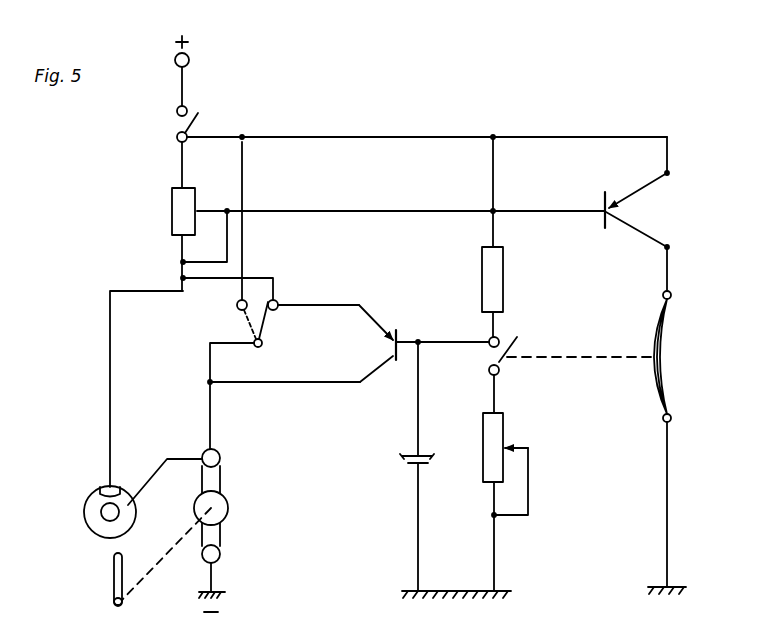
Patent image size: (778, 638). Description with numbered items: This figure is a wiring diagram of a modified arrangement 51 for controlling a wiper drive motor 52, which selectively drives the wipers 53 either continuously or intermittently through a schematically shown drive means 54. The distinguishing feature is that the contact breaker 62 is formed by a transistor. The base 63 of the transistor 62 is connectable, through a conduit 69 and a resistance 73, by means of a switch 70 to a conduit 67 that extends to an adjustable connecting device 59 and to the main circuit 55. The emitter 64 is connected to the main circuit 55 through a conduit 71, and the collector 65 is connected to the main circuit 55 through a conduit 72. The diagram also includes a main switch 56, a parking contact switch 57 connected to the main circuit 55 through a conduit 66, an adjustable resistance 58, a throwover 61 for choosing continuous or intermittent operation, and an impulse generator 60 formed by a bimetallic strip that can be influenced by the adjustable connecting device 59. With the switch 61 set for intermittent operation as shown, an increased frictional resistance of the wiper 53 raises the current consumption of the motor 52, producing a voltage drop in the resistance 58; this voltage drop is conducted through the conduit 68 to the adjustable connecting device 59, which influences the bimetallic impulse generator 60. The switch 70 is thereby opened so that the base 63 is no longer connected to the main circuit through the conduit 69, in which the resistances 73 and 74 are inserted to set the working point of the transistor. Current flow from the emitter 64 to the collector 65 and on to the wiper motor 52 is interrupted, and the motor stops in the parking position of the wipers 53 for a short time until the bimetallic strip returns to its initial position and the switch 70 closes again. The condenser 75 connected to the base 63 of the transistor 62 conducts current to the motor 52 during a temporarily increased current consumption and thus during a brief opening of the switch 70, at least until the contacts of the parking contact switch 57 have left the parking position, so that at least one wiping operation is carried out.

The arrangement 51 is at (499, 117).
The wiper drive motor 52 is at (228, 498).
The wipers 53 is at (113, 572).
The drive means 54 is at (163, 557).
The main circuit 55 is at (212, 413).
The main switch 56 is at (190, 126).
The parking contact switch 57 is at (84, 517).
The adjustable resistance 58 is at (172, 212).
The adjustable connecting device 59 is at (633, 207).
The impulse generator 60 is at (664, 341).
The throwover 61 is at (266, 300).
The contact breaker 62 is at (353, 392).
The base 63 is at (398, 325).
The emitter 64 is at (380, 325).
The collector 65 is at (375, 373).
The conduit 66 is at (108, 322).
The conduit 67 is at (422, 135).
The conduit 68 is at (462, 209).
The conduit 69 is at (496, 226).
The switch 70 is at (500, 366).
The conduit 71 is at (337, 303).
The conduit 72 is at (285, 384).
The resistance 73 is at (506, 272).
The resistance 74 is at (506, 424).
The condenser 75 is at (413, 455).